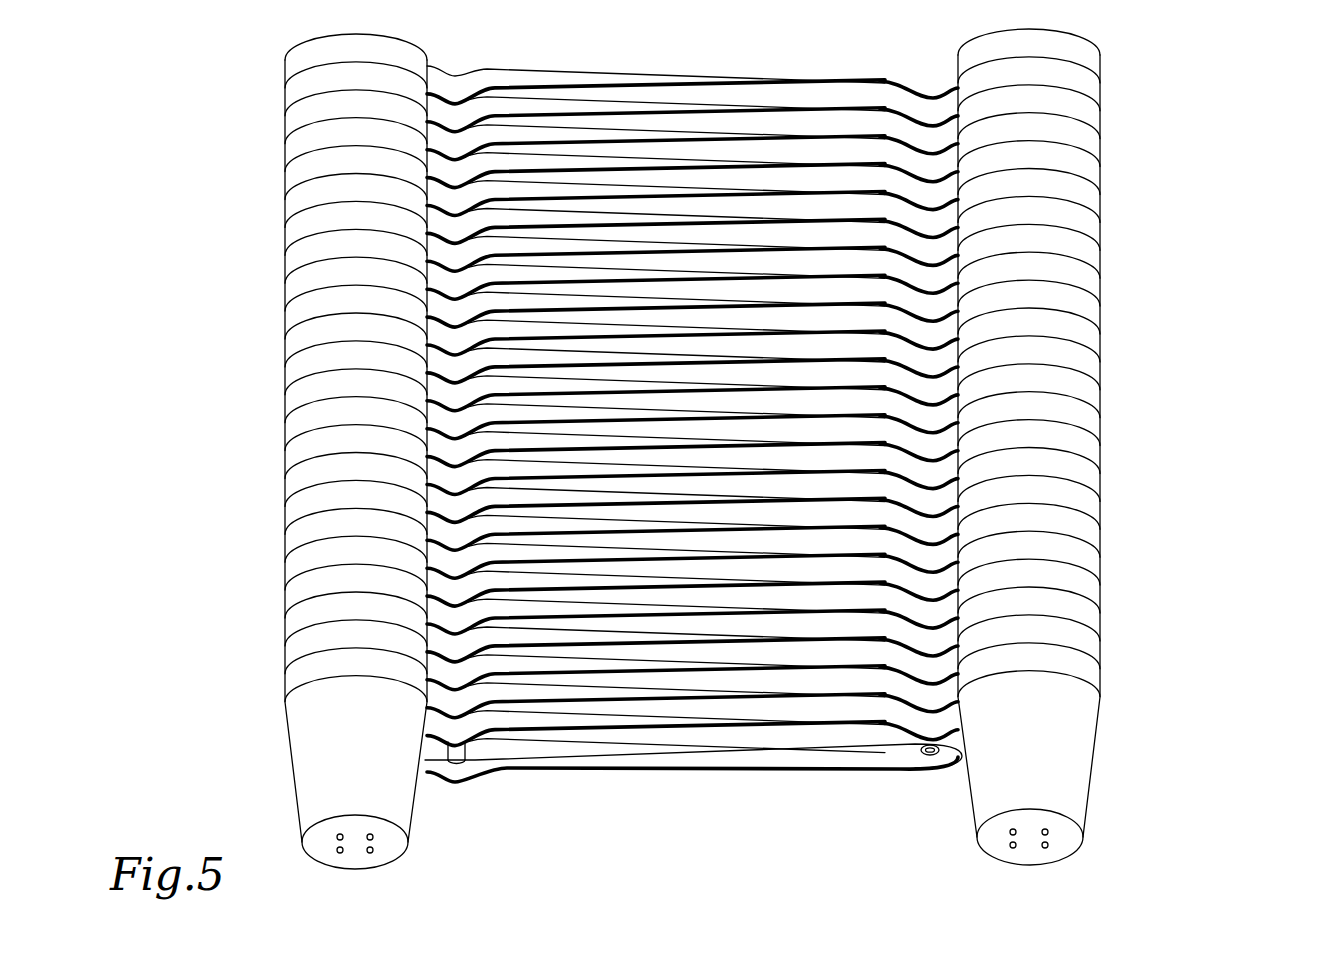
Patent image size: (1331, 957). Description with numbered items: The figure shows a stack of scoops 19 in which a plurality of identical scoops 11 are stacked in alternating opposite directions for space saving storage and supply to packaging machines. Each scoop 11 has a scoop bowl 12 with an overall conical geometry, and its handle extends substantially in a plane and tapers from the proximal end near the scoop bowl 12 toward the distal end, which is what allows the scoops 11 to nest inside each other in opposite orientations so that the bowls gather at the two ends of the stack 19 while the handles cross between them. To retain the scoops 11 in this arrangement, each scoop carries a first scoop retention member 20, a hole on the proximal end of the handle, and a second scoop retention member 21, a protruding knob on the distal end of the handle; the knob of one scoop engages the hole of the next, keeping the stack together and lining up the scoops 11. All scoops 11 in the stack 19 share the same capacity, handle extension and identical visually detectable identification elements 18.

The scoop 11 is at (268, 786).
The scoop bowl 12 is at (295, 70).
The visually detectable identification element 18 is at (392, 844).
The stack of scoops 19 is at (1240, 137).
The first scoop retention member 20 is at (460, 747).
The second scoop retention member 21 is at (910, 751).